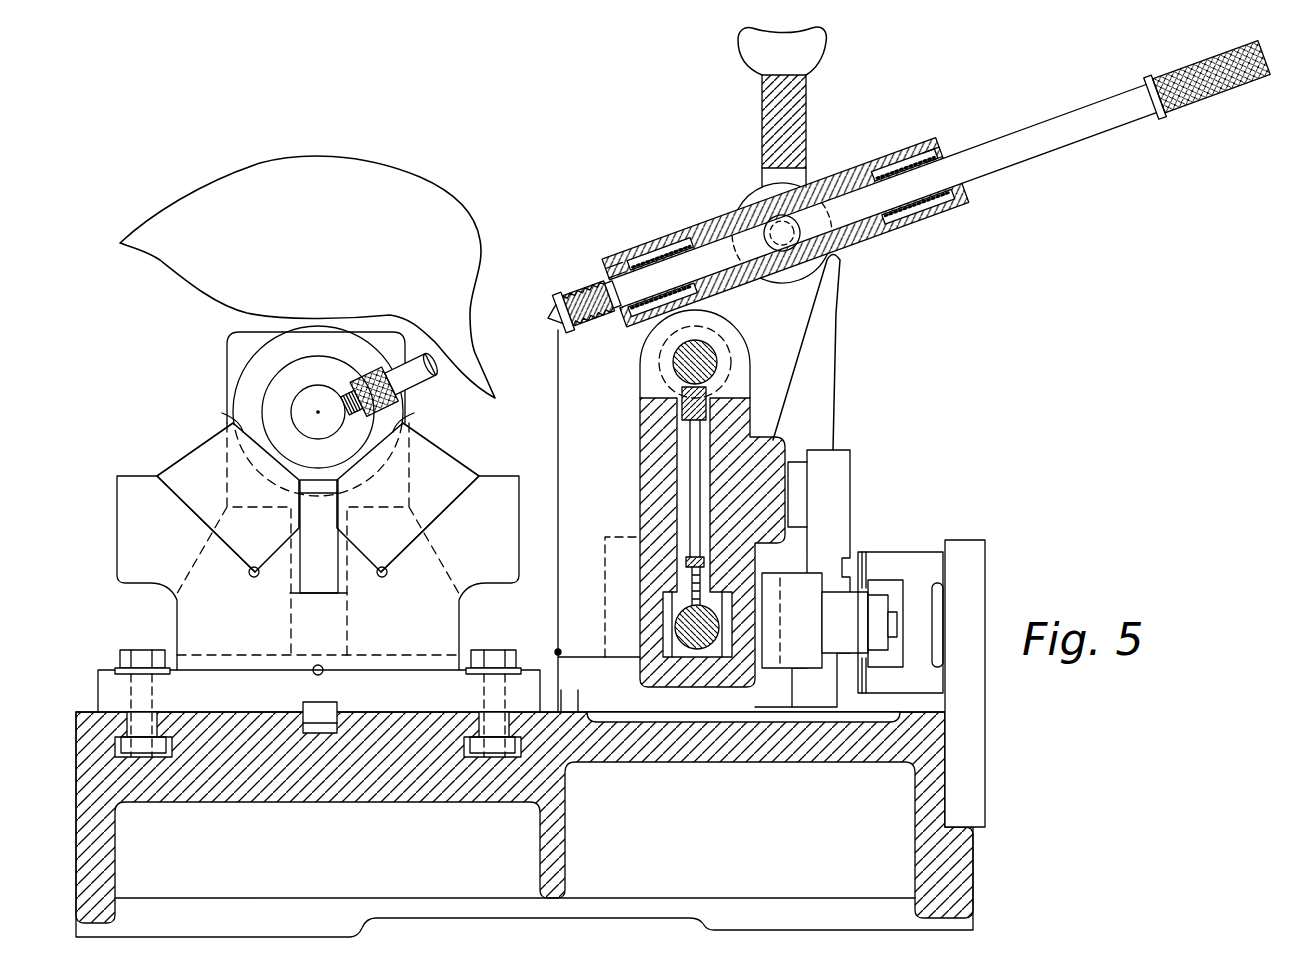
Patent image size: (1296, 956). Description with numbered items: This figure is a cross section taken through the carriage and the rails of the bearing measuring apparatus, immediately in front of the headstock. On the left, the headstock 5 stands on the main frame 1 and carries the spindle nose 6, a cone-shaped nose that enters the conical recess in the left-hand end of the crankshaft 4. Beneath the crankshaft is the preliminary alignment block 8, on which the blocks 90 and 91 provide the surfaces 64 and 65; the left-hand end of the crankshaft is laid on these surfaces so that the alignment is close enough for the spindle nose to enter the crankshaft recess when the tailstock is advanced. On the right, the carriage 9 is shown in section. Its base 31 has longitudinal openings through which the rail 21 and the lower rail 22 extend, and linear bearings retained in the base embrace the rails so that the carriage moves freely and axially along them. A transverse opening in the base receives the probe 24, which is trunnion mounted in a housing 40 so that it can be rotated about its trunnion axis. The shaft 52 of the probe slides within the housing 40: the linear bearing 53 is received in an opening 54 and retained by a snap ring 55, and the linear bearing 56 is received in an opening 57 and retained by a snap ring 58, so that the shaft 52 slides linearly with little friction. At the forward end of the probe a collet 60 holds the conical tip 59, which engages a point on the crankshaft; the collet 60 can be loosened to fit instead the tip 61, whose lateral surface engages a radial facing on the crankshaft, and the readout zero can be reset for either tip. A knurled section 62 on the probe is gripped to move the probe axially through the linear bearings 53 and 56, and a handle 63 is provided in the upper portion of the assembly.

The main frame 1 is at (85, 778).
The crankshaft 4 is at (433, 199).
The headstock 5 is at (232, 352).
The spindle nose 6 is at (300, 406).
The preliminary alignment block 8 is at (117, 538).
The carriage 9 is at (752, 118).
The rail 21 is at (712, 362).
The rail 22 is at (697, 640).
The probe 24 is at (697, 216).
The base 31 is at (842, 321).
The housing 40 is at (839, 168).
The shaft 52 is at (852, 237).
The linear bearing 53 is at (881, 163).
The opening 54 is at (930, 155).
The snap ring 55 is at (943, 148).
The linear bearing 56 is at (650, 253).
The opening 57 is at (687, 253).
The snap ring 58 is at (607, 268).
The conical tip 59 is at (552, 320).
The collet 60 is at (362, 376).
The tip 61 is at (337, 380).
The knurled section 62 is at (1186, 95).
The handle 63 is at (810, 58).
The surface 64 is at (224, 413).
The surface 65 is at (416, 413).
The block 90 is at (190, 468).
The block 91 is at (446, 468).